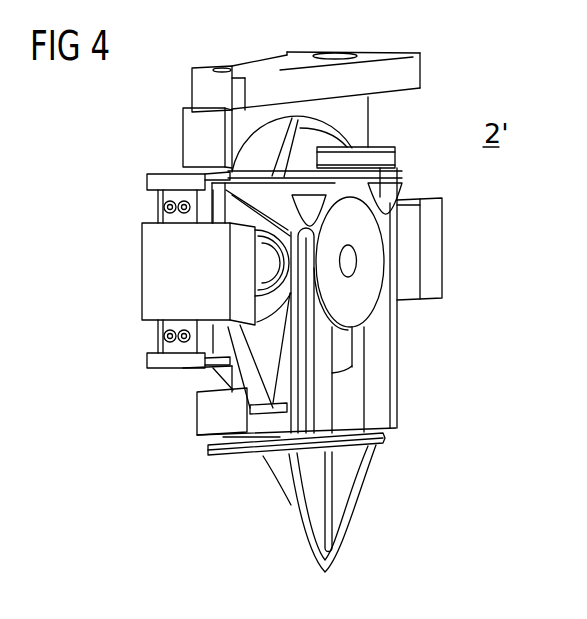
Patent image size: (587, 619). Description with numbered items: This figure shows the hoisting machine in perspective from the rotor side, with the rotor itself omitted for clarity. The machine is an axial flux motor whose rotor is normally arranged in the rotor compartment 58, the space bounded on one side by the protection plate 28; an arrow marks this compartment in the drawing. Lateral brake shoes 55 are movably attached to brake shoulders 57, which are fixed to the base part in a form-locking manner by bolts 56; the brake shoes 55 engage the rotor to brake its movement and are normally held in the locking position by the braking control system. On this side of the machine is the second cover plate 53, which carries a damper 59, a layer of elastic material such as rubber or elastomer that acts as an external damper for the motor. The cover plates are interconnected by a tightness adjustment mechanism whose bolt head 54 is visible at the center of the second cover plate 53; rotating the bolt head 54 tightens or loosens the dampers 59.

The protection plate 28 is at (345, 355).
The second cover plate 53 is at (353, 305).
The bolt head 54 is at (349, 266).
The lateral brake shoes 55 is at (430, 257).
The bolts 56 is at (166, 212).
The brake shoulders 57 is at (148, 182).
The rotor compartment 58 is at (330, 134).
The damper 59 is at (258, 262).